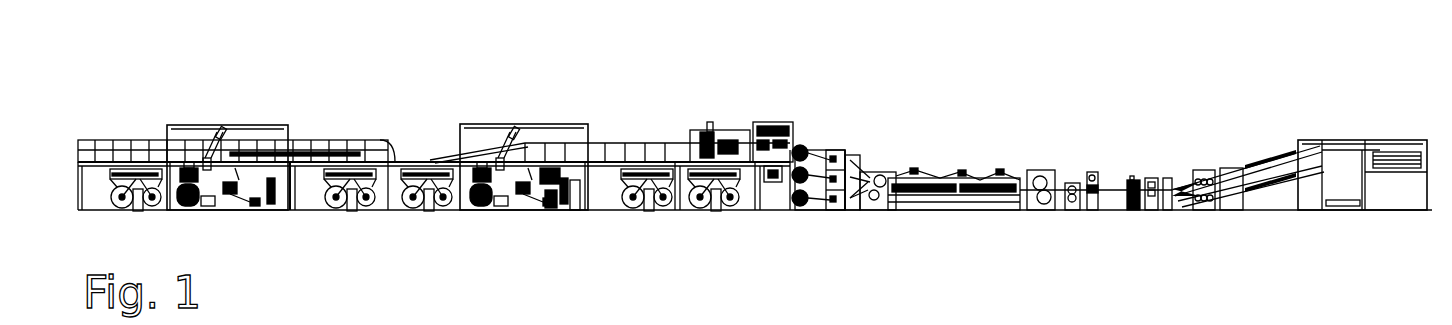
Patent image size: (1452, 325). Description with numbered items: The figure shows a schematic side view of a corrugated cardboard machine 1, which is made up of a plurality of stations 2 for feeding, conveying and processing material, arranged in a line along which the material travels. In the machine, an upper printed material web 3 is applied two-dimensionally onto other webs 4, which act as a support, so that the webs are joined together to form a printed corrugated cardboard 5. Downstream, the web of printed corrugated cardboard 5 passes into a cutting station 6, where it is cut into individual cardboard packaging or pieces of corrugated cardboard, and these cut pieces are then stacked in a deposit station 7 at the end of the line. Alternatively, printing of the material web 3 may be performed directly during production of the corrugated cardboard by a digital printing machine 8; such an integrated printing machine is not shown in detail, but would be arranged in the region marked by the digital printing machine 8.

The corrugated cardboard machine 1 is at (110, 89).
The stations 2 is at (530, 235).
The upper printed material web 3 is at (857, 212).
The other webs 4 is at (853, 165).
The printed corrugated cardboard 5 is at (1181, 176).
The cutting station 6 is at (1148, 164).
The deposit station 7 is at (1297, 126).
The digital printing machine 8 is at (781, 228).